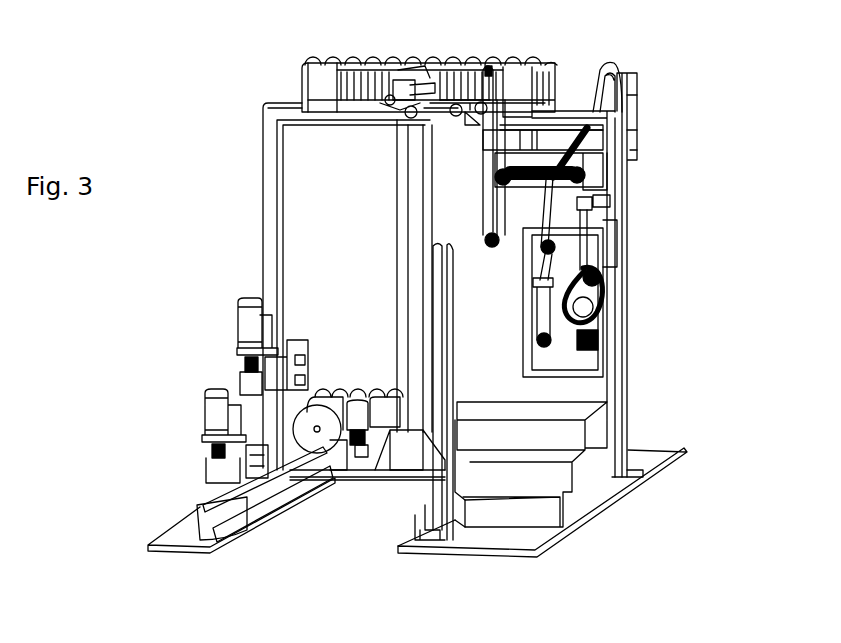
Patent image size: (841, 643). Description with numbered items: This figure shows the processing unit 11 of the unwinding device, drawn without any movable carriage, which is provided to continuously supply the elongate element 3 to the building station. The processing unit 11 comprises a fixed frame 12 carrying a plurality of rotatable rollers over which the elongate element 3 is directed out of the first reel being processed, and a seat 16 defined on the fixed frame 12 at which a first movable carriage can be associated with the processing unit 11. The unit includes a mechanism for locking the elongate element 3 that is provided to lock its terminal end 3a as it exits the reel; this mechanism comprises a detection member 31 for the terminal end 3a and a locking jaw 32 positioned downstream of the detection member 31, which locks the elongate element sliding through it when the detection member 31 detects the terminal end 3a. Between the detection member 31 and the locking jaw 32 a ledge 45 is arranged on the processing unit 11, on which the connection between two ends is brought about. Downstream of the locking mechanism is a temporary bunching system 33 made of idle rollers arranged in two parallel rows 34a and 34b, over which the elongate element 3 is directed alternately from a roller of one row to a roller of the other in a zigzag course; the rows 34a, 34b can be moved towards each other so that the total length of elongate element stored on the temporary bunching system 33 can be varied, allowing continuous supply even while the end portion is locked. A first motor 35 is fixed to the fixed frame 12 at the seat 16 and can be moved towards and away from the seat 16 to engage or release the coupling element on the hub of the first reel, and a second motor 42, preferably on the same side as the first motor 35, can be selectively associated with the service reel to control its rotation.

The elongate element 3 is at (551, 93).
The terminal end 3a is at (378, 110).
The processing unit 11 is at (660, 125).
The fixed frame 12 is at (263, 188).
The seat 16 is at (289, 540).
The detection member 31 is at (400, 72).
The locking jaw 32 is at (567, 283).
The temporary bunching system 33 is at (490, 66).
The first row of idle rollers 34a is at (347, 66).
The second row of idle rollers 34b is at (323, 388).
The first motor 35 is at (234, 333).
The second motor 42 is at (201, 423).
The ledge 45 is at (535, 168).